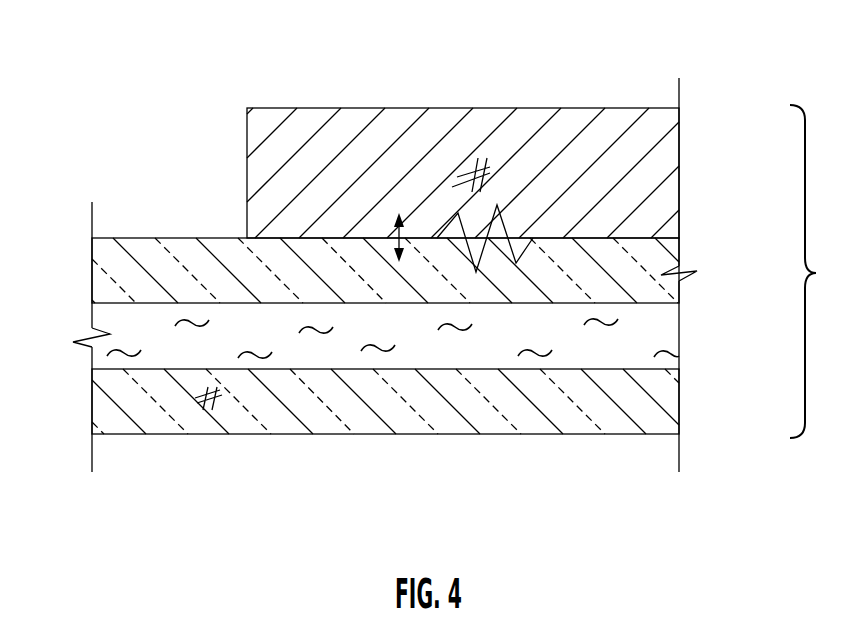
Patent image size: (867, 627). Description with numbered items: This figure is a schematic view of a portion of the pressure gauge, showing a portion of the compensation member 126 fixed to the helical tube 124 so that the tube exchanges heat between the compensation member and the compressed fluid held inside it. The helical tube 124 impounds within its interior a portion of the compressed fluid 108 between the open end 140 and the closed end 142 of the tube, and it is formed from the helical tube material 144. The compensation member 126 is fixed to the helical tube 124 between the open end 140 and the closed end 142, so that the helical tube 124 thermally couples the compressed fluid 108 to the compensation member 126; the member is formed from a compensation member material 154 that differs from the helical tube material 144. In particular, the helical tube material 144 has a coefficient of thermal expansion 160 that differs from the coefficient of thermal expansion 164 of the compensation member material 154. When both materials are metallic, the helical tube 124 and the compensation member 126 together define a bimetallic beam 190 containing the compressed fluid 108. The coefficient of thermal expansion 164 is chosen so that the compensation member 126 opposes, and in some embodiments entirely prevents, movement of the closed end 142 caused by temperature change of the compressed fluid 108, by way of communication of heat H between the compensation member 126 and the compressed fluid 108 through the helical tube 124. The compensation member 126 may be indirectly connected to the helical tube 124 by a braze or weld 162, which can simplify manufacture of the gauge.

The compensation member 126 is at (361, 68).
The compensation member material 154 is at (370, 174).
The coefficient of thermal expansion 164 is at (490, 168).
The braze or weld 162 is at (505, 225).
The heat H is at (393, 232).
The open end 140 is at (748, 331).
The compressed fluid 108 is at (458, 330).
The helical tube 124 is at (388, 420).
The helical tube material 144 is at (120, 414).
The coefficient of thermal expansion 160 is at (213, 393).
The closed end 142 is at (50, 371).
The bimetallic beam 190 is at (823, 271).